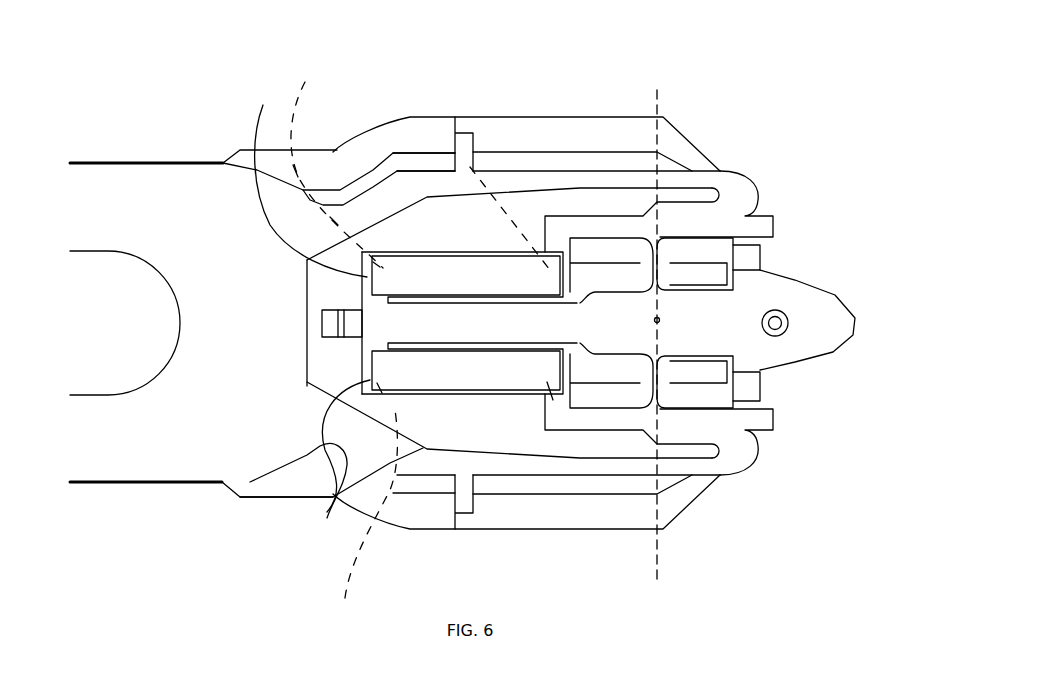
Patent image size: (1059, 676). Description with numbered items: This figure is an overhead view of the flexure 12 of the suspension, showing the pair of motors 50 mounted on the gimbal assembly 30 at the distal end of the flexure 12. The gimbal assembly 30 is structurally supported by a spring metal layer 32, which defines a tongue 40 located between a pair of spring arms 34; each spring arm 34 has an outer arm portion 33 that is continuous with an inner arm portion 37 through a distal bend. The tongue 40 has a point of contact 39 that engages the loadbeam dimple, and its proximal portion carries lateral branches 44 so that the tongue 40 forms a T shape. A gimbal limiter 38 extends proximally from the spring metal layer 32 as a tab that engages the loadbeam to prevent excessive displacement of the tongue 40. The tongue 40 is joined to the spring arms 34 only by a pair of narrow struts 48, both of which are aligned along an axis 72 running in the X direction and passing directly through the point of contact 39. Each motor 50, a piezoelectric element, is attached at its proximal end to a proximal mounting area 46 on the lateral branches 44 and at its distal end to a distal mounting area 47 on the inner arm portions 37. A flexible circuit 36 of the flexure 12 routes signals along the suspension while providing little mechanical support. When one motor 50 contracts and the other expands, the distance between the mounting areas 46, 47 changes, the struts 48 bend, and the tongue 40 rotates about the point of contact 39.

The flexure 12 is at (163, 513).
The gimbal assembly 30 is at (685, 80).
The spring metal layer 32 is at (322, 447).
The outer arm portion 33 is at (693, 178).
The spring arm 34 is at (595, 178).
The flexible circuit 36 is at (505, 130).
The inner arm portion 37 is at (708, 213).
The gimbal limiter 38 is at (327, 332).
The point of contact 39 is at (657, 320).
The tongue 40 is at (807, 288).
The lateral branch 44 is at (331, 309).
The proximal mounting area 46 is at (420, 334).
The distal mounting area 47 is at (458, 103).
The strut 48 is at (660, 265).
The motor 50 is at (391, 266).
The axis 72 is at (657, 542).